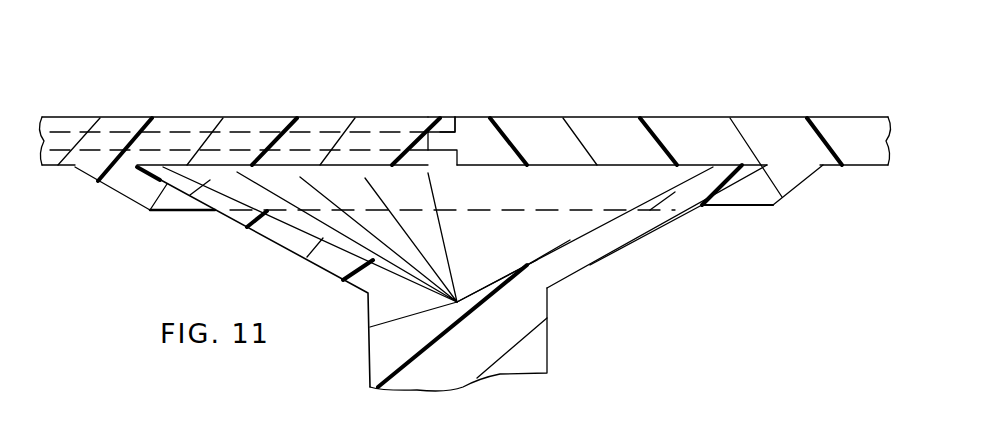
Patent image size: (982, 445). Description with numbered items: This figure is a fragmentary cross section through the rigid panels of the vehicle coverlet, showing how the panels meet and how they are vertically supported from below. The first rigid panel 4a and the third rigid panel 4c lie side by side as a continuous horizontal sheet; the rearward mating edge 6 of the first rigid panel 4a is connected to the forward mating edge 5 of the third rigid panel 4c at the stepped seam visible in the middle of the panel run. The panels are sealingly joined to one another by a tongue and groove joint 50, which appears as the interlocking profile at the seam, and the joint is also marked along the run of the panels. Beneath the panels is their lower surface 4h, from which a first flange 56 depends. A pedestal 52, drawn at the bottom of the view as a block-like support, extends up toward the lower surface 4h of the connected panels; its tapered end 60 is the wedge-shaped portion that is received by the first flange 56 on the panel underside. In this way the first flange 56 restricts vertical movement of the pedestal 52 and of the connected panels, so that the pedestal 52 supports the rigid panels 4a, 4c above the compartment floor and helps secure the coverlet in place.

The first rigid panel 4a is at (178, 116).
The third rigid panel 4c is at (620, 116).
The lower surface 4h is at (855, 168).
The forward mating edge 5 is at (460, 115).
The rearward mating edge 6 is at (447, 115).
The tongue and groove joint 50 is at (456, 76).
The pedestal 52 is at (548, 347).
The first flange 56 is at (123, 197).
The tapered ends 60 is at (623, 246).